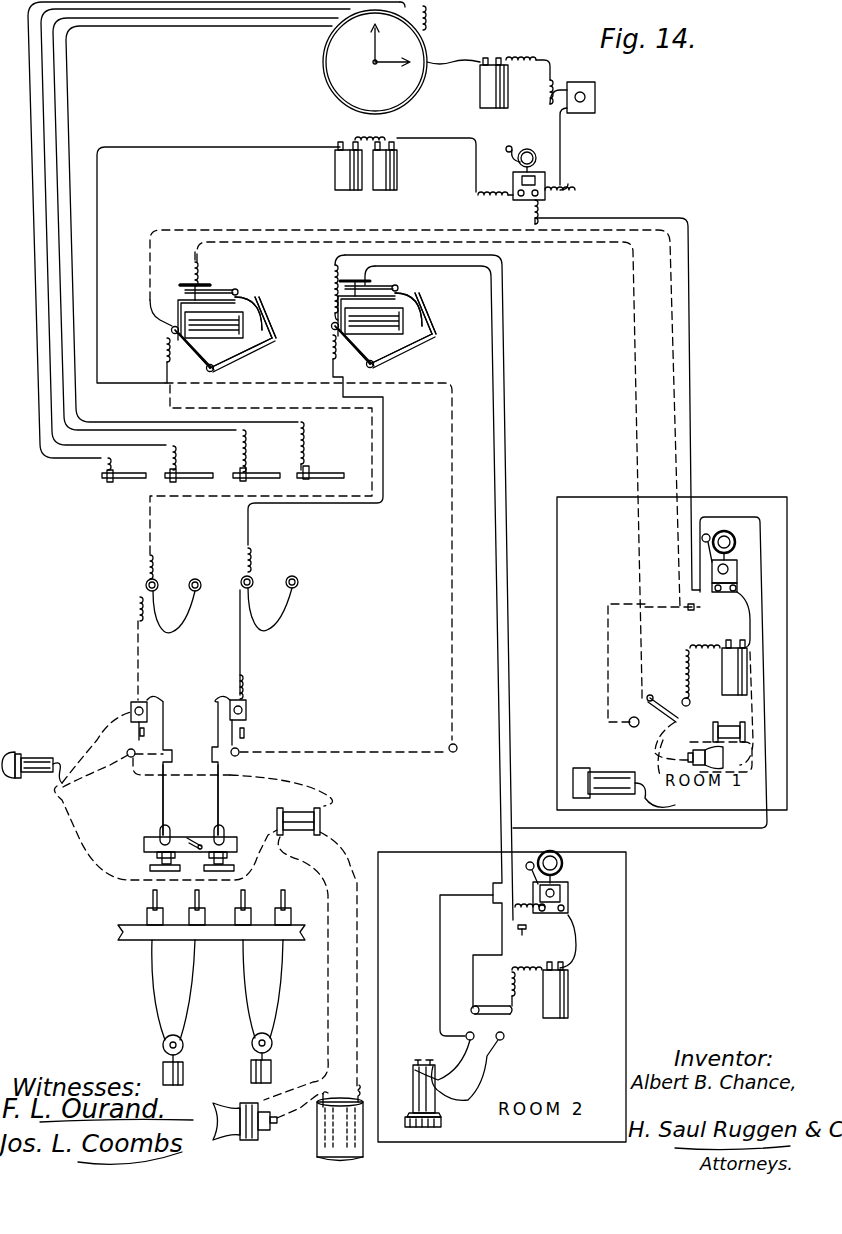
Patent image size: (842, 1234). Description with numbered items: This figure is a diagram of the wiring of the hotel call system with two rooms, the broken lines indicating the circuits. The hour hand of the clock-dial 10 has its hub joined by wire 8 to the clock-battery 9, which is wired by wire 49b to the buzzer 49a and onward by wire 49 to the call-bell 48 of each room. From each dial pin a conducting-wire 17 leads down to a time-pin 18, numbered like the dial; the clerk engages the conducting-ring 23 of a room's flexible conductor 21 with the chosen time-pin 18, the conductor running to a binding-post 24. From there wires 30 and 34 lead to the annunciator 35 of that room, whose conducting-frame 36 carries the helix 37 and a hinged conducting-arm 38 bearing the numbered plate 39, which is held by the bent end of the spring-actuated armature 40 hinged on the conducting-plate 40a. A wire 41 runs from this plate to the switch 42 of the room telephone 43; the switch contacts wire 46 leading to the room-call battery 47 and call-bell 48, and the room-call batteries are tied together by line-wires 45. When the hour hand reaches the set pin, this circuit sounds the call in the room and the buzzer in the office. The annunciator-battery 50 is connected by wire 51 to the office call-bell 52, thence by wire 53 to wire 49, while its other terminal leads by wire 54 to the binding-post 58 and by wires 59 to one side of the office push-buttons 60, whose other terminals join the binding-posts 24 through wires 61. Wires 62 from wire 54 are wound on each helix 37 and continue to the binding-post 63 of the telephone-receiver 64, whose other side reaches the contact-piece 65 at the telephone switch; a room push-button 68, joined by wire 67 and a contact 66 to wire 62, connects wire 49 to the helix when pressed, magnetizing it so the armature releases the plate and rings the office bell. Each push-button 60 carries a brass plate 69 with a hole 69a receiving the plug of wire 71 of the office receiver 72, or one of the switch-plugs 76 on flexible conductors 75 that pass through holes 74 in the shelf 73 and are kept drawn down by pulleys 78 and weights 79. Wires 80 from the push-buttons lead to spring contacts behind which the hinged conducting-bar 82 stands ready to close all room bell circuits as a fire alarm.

The wire 8 is at (453, 54).
The clock-battery 9 is at (480, 94).
The clock-dial 10 is at (375, 62).
The conducting-wire 17 is at (22, 406).
The time-pin 18 is at (214, 476).
The flexible conductor 21 is at (180, 620).
The conducting-ring 23 is at (197, 592).
The binding-post 24 is at (146, 588).
The conducting-wire 30 is at (211, 548).
The wire 34 is at (165, 348).
The annunciator 35 is at (351, 311).
The conducting-frame 36 is at (260, 351).
The helix 37 is at (304, 326).
The hinged conducting-arm 38 is at (321, 352).
The plate 39 is at (355, 315).
The spring-actuated armature 40 is at (253, 300).
The conducting-plate 40a is at (222, 294).
The wire 41 is at (338, 350).
The switch 42 is at (574, 851).
The telephone 43 is at (645, 730).
The line-wires 45 is at (649, 672).
The wire 46 is at (631, 799).
The room-call battery 47 is at (735, 677).
The call-bell 48 is at (724, 532).
The wire 49 is at (624, 396).
The buzzer 49a is at (596, 104).
The wire 49b is at (528, 59).
The annunciator-battery 50 is at (335, 180).
The wire 51 is at (455, 166).
The call-bell 52 is at (540, 165).
The wire 53 is at (534, 212).
The wire 54 is at (288, 433).
The binding-post 58 is at (442, 743).
The wires 59 is at (342, 743).
The push-button 60 is at (194, 747).
The wire 61 is at (136, 652).
The wire 62 is at (272, 240).
The binding-post 63 is at (632, 728).
The telephone-receiver 64 is at (540, 947).
The contact-piece 65 is at (561, 911).
The contact 66 is at (694, 611).
The wire 67 is at (477, 916).
The push-button 68 is at (531, 937).
The brass plate 69 is at (138, 698).
The hole 69a is at (131, 705).
The wire 71 is at (165, 796).
The receiver 72 is at (32, 760).
The shelf 73 is at (118, 934).
The holes 74 is at (158, 933).
The flexible conductor 75 is at (156, 1024).
The switch-plug 76 is at (146, 902).
The pulley 78 is at (183, 1047).
The weight 79 is at (216, 1072).
The wire 80 is at (202, 800).
The hinged conducting-bar 82 is at (190, 845).